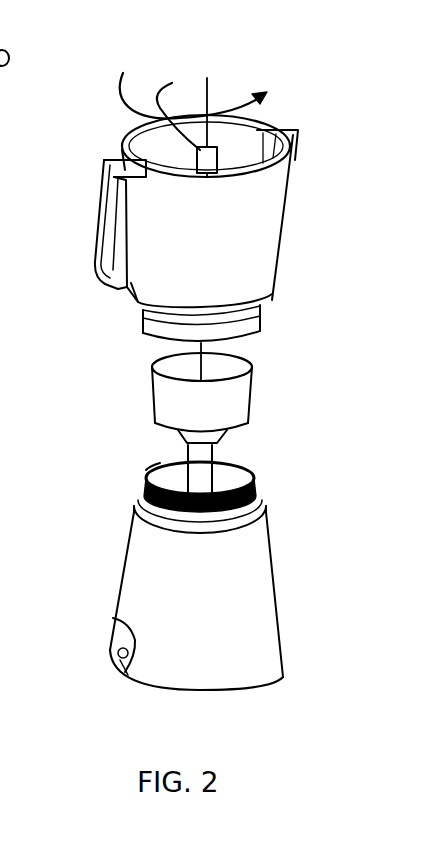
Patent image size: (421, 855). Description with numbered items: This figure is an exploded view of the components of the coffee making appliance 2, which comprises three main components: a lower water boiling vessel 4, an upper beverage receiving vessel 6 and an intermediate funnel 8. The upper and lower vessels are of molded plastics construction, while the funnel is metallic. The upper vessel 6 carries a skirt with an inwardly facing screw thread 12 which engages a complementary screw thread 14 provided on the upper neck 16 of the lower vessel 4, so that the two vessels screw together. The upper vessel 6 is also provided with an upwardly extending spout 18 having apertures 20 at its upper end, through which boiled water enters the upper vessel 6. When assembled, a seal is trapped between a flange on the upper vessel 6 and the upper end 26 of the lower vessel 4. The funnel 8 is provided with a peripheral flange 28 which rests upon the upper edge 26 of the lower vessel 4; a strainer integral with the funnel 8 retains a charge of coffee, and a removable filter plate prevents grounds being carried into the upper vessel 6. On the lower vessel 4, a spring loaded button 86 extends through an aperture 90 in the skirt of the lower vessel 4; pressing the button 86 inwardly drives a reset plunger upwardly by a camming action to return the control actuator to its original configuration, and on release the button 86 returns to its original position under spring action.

The coffee making appliance 2 is at (315, 430).
The lower water boiling vessel 4 is at (270, 555).
The upper beverage receiving vessel 6 is at (277, 233).
The intermediate funnel 8 is at (252, 393).
The inwardly facing screw thread 12 is at (256, 327).
The complementary screw thread 14 is at (255, 490).
The upper neck 16 is at (143, 495).
The upwardly extending spout 18 is at (215, 170).
The apertures 20 is at (183, 94).
The upper end of the lower vessel 26 is at (148, 470).
The peripheral flange 28 is at (250, 370).
The spring loaded button 86 is at (130, 673).
The aperture in the skirt 90 is at (113, 618).